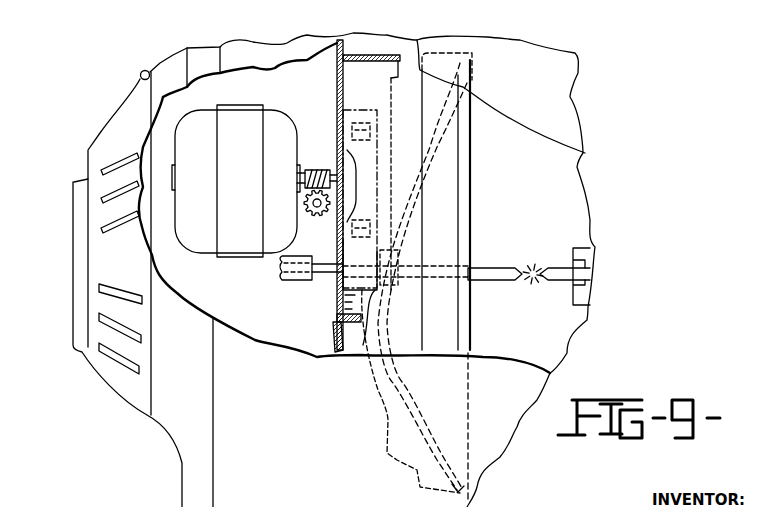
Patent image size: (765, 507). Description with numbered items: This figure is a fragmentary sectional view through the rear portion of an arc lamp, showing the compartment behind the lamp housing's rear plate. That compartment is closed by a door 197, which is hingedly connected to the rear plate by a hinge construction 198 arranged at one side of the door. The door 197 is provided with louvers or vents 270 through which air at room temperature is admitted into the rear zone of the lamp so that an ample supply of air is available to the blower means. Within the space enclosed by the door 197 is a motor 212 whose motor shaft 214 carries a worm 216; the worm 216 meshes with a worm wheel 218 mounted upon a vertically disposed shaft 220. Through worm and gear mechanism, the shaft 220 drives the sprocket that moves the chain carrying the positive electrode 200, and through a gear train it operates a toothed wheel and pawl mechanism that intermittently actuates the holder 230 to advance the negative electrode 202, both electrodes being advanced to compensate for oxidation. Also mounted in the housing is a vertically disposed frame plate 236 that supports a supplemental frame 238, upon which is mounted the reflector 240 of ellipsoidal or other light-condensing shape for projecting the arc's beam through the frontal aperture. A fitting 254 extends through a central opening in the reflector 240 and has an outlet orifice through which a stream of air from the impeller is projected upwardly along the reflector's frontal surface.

The door 197 is at (107, 123).
The hinge construction 198 is at (143, 70).
The louvers or vents 270 is at (107, 172).
The motor 212 is at (260, 92).
The motor shaft 214 is at (300, 178).
The worm 216 is at (330, 148).
The worm wheel 218 is at (311, 216).
The shaft 220 is at (313, 204).
The holder 230 is at (300, 281).
The frame plate 236 is at (357, 113).
The supplemental frame 238 is at (447, 53).
The reflector 240 is at (438, 104).
The fitting 254 is at (397, 282).
The negative electrode 202 is at (522, 243).
The positive electrode 200 is at (578, 228).